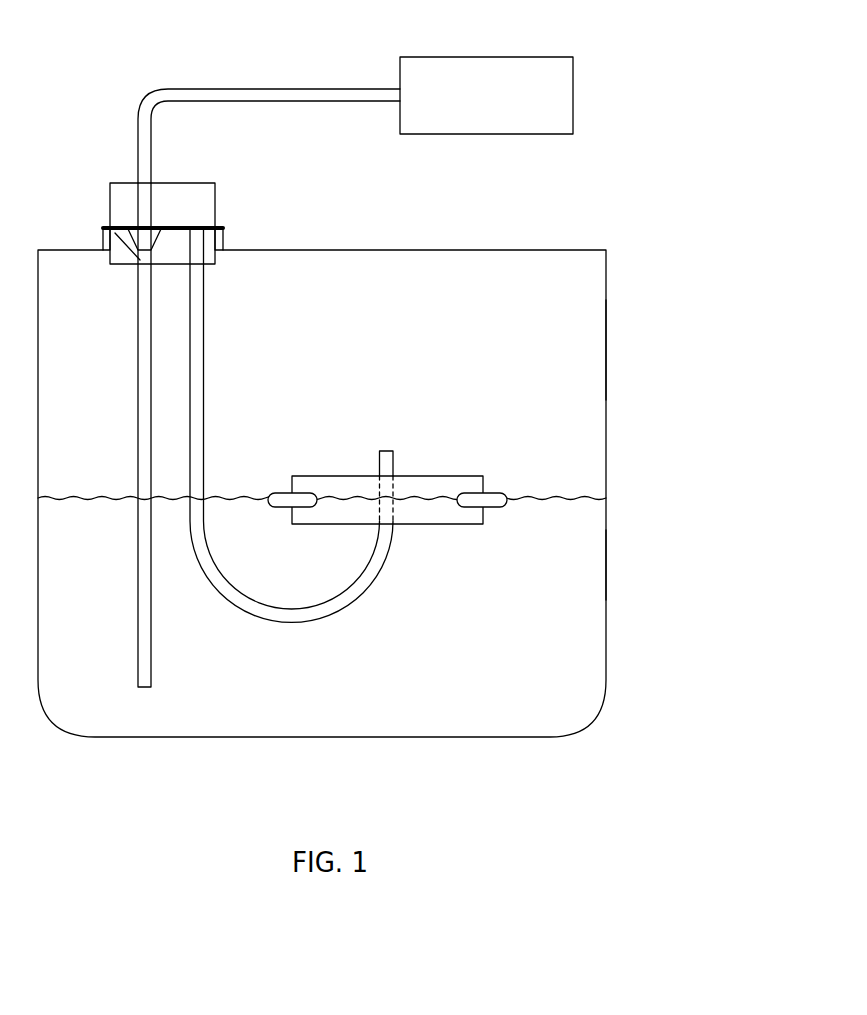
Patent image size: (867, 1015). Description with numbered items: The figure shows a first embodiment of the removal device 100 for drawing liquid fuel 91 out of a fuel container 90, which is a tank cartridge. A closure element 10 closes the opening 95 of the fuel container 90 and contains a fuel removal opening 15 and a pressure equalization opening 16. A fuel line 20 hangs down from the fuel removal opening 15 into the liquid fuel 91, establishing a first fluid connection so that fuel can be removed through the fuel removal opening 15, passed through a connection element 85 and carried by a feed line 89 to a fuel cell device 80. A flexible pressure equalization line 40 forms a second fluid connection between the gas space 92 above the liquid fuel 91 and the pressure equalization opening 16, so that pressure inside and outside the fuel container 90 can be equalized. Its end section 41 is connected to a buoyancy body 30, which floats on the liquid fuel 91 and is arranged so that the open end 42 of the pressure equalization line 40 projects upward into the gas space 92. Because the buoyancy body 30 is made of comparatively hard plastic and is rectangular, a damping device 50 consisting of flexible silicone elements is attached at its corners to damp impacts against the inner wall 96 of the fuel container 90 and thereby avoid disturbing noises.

The closure element 10 is at (105, 238).
The fuel removal opening 15 is at (131, 248).
The pressure equalization opening 16 is at (215, 232).
The fuel line 20 is at (138, 372).
The buoyancy body 30 is at (335, 480).
The pressure equalization line 40 is at (205, 372).
The end section 41 is at (390, 497).
The open end 42 is at (386, 451).
The damping device 50 is at (278, 493).
The fuel cell device 80 is at (545, 62).
The connection element 85 is at (125, 193).
The feed line 89 is at (297, 88).
The fuel container 90 is at (522, 244).
The liquid fuel 91 is at (600, 538).
The gas space 92 is at (598, 336).
The opening 95 is at (223, 240).
The wall 96 is at (608, 553).
The removal device 100 is at (414, 589).